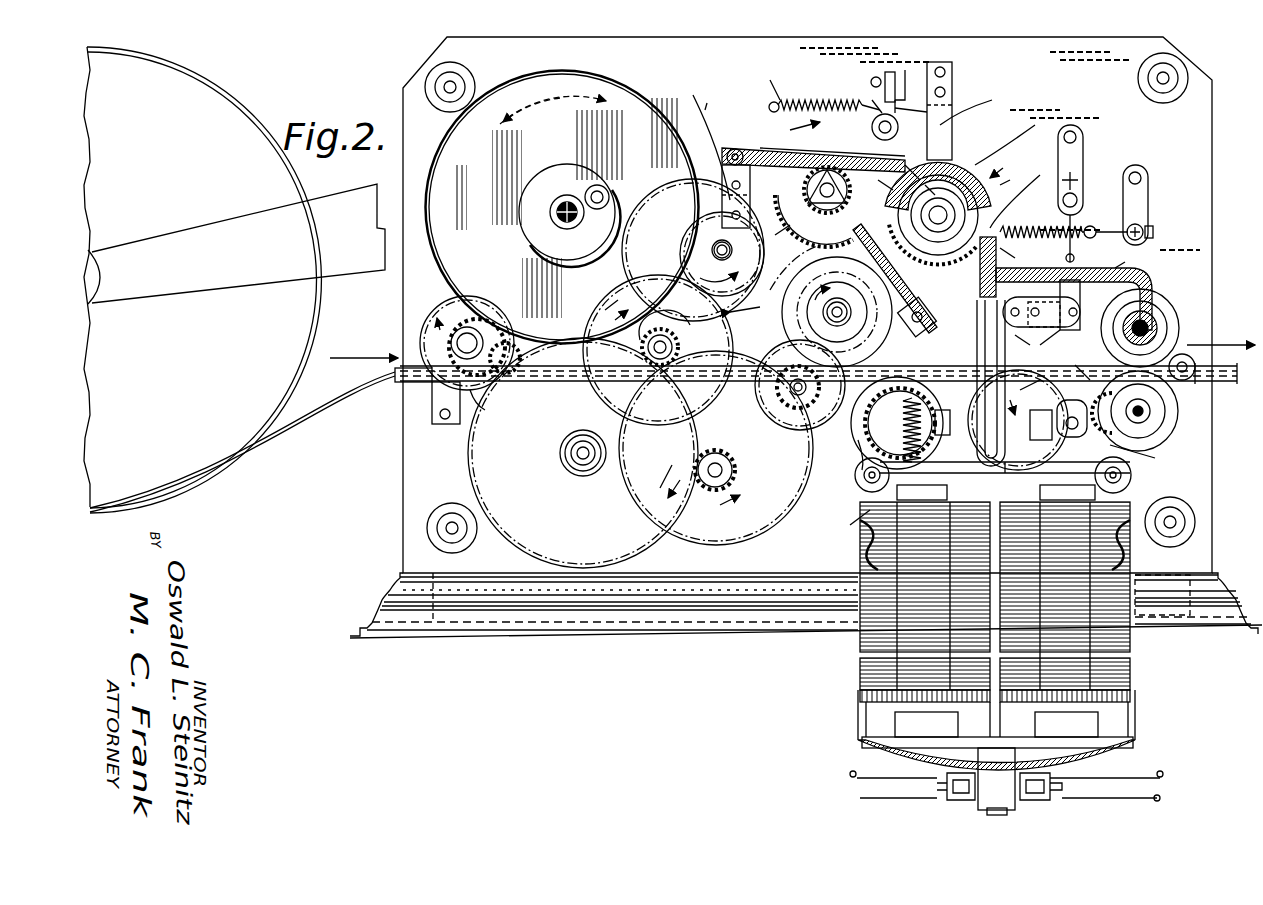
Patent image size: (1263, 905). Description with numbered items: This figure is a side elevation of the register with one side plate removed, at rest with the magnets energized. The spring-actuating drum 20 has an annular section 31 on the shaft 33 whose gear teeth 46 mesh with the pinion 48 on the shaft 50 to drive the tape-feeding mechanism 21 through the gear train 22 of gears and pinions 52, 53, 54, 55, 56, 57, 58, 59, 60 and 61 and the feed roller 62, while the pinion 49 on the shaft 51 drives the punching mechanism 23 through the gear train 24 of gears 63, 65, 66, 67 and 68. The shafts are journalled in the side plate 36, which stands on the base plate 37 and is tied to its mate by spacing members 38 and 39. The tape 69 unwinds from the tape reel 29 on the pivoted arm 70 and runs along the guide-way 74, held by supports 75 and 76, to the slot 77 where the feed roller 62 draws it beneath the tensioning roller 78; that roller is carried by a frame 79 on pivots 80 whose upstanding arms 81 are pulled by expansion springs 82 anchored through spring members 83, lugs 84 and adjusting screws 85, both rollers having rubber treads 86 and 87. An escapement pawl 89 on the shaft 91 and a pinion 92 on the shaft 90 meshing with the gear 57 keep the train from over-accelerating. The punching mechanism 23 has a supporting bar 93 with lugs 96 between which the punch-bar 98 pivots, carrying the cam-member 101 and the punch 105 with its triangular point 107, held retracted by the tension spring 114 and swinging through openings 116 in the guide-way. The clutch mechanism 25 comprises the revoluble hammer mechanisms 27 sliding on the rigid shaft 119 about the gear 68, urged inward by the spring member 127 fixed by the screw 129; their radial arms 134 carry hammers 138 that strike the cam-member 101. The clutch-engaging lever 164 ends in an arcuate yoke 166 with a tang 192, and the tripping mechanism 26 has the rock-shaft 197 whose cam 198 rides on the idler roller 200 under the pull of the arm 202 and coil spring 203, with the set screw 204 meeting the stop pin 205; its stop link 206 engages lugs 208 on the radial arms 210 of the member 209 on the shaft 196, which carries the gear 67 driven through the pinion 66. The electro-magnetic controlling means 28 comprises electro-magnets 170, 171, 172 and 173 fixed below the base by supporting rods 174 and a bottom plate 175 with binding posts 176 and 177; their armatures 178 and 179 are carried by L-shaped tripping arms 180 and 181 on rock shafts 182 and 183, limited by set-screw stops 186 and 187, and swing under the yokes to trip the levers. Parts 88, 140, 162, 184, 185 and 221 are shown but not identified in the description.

The spring-actuating drum 20 is at (428, 270).
The tape-feeding mechanism 21 is at (1150, 285).
The gear train 22 is at (772, 486).
The punching mechanism 23 is at (1040, 298).
The gear train 24 is at (748, 307).
The clutch mechanism 25 is at (1017, 185).
The actuating-drum tripping-mechanism 26 is at (966, 109).
The revoluble hammer mechanism 27 is at (975, 172).
The electro-magnetic controlling means 28 is at (1021, 660).
The tape reel 29 is at (208, 470).
The annular section 31 is at (567, 207).
The shaft 33 is at (560, 218).
The side plate 36 is at (812, 65).
The base plate 37 is at (645, 617).
The spacing member 38 is at (465, 82).
The spacing member 39 is at (1170, 72).
The gear teeth 46 is at (465, 238).
The pinion 48 is at (485, 325).
The pinion 49 is at (680, 345).
The shaft 50 is at (440, 340).
The shaft 51 is at (645, 378).
The gear 52 is at (487, 411).
The gear 53 is at (490, 508).
The pinion 54 is at (722, 254).
The gear 55 is at (760, 548).
The pinion 56 is at (790, 410).
The gear 57 is at (841, 458).
The gear 58 is at (862, 485).
The gear 59 is at (897, 423).
The gear 60 is at (1018, 420).
The gear 61 is at (1144, 456).
The feed roller 62 is at (1120, 430).
The gear 63 is at (658, 350).
The gear 65 is at (628, 240).
The pinion 66 is at (805, 240).
The gear 67 is at (775, 150).
The gear 68 is at (958, 120).
The tape 69 is at (330, 385).
The arm 70 is at (236, 244).
The guide-way 74 is at (420, 382).
The support 75 is at (445, 398).
The support 76 is at (1185, 380).
The slot 77 is at (1172, 345).
The tensioning roller 78 is at (1160, 325).
The frame 79 is at (1127, 257).
The pivot 80 is at (978, 300).
The upstanding arm 81 is at (1020, 250).
The expansion spring 82 is at (1042, 222).
The spring member 83 is at (1078, 215).
The lug 84 is at (1148, 218).
The adjusting screw 85 is at (1155, 230).
The rubber tread 86 is at (1165, 318).
The rubber tread 87 is at (1180, 415).
The wheel 88 is at (837, 312).
The escapement pawl 89 is at (925, 300).
The shaft 90 is at (850, 312).
The shaft 91 is at (917, 330).
The pinion 92 is at (827, 281).
The supporting bar 93 is at (1041, 312).
The lugs 96 is at (1017, 346).
The punch-bar 98 is at (1042, 347).
The cam-member 101 is at (1105, 224).
The punch 105 is at (1035, 387).
The triangular shaped point 107 is at (927, 182).
The tension spring 114 is at (1078, 285).
The openings 116 is at (1094, 378).
The rigid shaft 119 is at (1017, 162).
The spring member 127 is at (911, 112).
The screw 129 is at (952, 72).
The radially arranged arms 134 is at (905, 164).
The hammers 138 is at (1023, 134).
The wheel 140 is at (787, 267).
The spring 162 is at (700, 139).
The clutch-engaging lever 164 is at (735, 180).
The arcuate yoke 166 is at (1023, 194).
The electro-magnet 170 is at (875, 648).
The electro-magnet 171 is at (868, 548).
The electro-magnet 172 is at (1150, 603).
The electro-magnet 173 is at (1135, 548).
The supporting rods 174 is at (985, 718).
The bottom plate 175 is at (1135, 745).
The binding post 176 is at (940, 790).
The binding post 177 is at (1062, 787).
The armature 178 is at (922, 494).
The armature 179 is at (1067, 494).
The L-shaped tripping arm 180 is at (1005, 474).
The L-shaped tripping arm 181 is at (1021, 474).
The rock shaft 182 is at (843, 522).
The rock shaft 183 is at (1132, 478).
The spring 184 is at (903, 424).
The disc 185 is at (1070, 418).
The adjustable set-screw stop 186 is at (957, 425).
The adjustable set-screw stop 187 is at (1030, 428).
The tang 192 is at (1065, 180).
The shaft 196 is at (829, 200).
The rock-shaft 197 is at (898, 127).
The cam member 198 is at (858, 104).
The idler roller 200 is at (812, 100).
The arm 202 is at (908, 78).
The coil spring 203 is at (764, 80).
The set screw 204 is at (890, 72).
The stop pin 205 is at (872, 78).
The stop link 206 is at (882, 178).
The lugs 208 is at (734, 242).
The member 209 is at (791, 122).
The radial arms 210 is at (809, 148).
The pin 221 is at (775, 238).